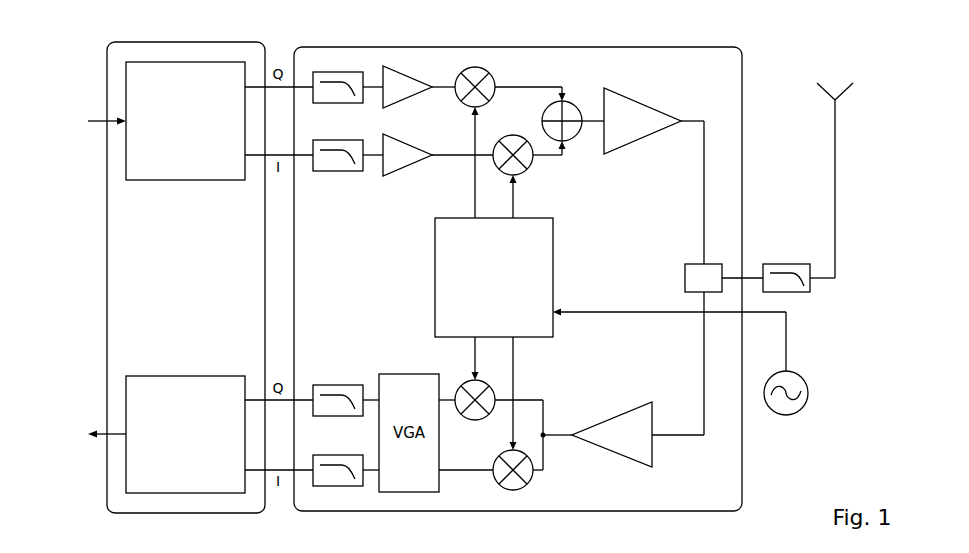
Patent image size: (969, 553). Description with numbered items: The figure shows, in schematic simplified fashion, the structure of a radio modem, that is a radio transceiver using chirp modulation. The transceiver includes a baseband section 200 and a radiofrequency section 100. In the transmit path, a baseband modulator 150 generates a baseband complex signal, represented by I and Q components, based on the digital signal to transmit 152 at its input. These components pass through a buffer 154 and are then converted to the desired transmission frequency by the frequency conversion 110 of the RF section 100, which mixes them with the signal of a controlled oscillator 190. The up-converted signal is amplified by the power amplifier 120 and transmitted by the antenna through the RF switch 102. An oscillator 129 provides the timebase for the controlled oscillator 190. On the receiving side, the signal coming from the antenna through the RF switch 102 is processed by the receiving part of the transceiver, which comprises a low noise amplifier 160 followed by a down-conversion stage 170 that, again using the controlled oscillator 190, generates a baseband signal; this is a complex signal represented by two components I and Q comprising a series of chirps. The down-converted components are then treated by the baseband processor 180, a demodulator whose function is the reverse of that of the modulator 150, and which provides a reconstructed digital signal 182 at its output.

The RF section 100 is at (744, 227).
The RF switch 102 is at (683, 263).
The frequency conversion 110 is at (479, 65).
The power amplifier 120 is at (661, 108).
The oscillator, timebase 129 is at (786, 416).
The baseband modulator 150 is at (228, 62).
The digital signal to transmit 152 is at (63, 107).
The buffer 154 is at (402, 66).
The low noise amplifier 160 is at (653, 449).
The down-conversion stage 170 is at (505, 490).
The baseband processor, demodulator 180 is at (228, 494).
The reconstructed digital signal 182 is at (65, 452).
The controlled oscillator 190 is at (435, 228).
The baseband section 200 is at (107, 258).